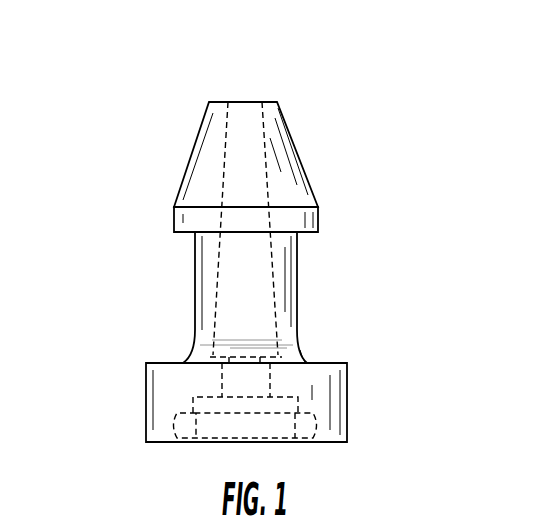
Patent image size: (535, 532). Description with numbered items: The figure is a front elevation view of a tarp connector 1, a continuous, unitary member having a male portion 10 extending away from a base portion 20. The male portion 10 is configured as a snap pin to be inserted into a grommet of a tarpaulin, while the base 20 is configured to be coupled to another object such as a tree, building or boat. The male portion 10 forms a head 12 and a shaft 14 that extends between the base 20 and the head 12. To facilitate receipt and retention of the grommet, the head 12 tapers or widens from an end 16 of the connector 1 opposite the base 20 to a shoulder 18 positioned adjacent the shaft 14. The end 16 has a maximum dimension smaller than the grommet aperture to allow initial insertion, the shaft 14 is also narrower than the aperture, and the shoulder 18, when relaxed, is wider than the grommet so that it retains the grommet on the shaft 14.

The connector 1 is at (336, 63).
The male portion 10 is at (141, 153).
The head 12 is at (280, 173).
The shaft 14 is at (283, 273).
The end 16 is at (277, 102).
The shoulder 18 is at (283, 220).
The base portion 20 is at (113, 400).